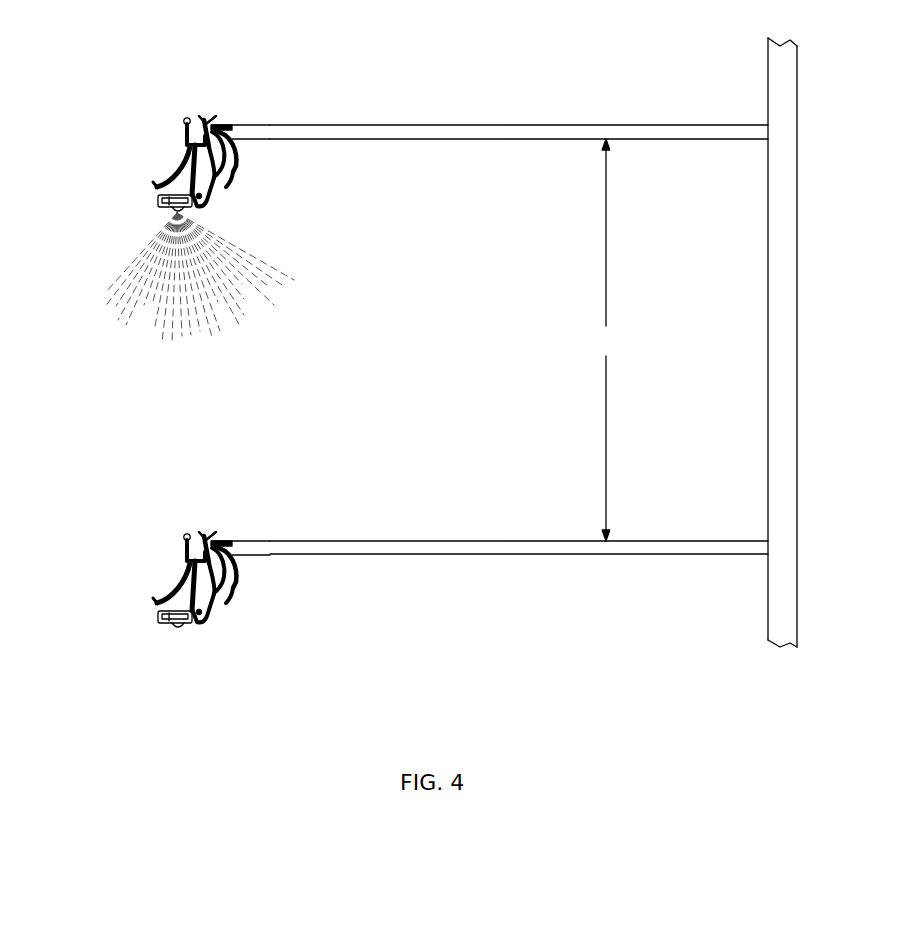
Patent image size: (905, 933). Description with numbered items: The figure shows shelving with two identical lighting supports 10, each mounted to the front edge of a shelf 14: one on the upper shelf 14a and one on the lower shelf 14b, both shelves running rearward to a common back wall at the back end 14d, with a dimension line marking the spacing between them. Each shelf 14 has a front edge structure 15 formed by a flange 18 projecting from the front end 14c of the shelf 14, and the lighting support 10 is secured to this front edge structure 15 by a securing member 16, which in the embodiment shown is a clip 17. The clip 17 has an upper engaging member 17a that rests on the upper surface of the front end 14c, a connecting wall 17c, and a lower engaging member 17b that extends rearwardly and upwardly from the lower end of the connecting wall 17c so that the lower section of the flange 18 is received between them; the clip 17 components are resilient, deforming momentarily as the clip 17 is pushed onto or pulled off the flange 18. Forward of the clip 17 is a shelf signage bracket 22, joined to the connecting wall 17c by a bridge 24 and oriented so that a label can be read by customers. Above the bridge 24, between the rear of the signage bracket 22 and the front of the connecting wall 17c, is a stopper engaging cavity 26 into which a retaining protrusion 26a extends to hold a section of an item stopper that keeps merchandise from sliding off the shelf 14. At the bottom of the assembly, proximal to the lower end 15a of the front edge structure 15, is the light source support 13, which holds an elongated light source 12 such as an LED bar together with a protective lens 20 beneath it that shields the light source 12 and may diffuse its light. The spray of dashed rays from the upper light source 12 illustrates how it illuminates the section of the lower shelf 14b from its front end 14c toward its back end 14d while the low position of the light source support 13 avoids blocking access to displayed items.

The lighting support 10 is at (97, 108).
The light source 12 is at (167, 632).
The light source support 13 is at (148, 210).
The shelf 14 is at (606, 340).
The upper shelf 14a is at (362, 135).
The lower shelf 14b is at (362, 551).
The front end 14c is at (221, 116).
The back end 14d is at (759, 113).
The front edge structure 15 is at (241, 139).
The lower end 15a is at (212, 210).
The securing member 16 is at (187, 192).
The clip 17 is at (233, 197).
The upper engaging member 17a is at (212, 118).
The lower engaging member 17b is at (232, 178).
The connecting wall 17c is at (216, 161).
The flange 18 is at (232, 162).
The protective lens 20 is at (178, 632).
The shelf signage bracket 22 is at (172, 178).
The bridge 24 is at (196, 147).
The stopper engaging cavity 26 is at (197, 121).
The retaining protrusion 26a is at (186, 134).